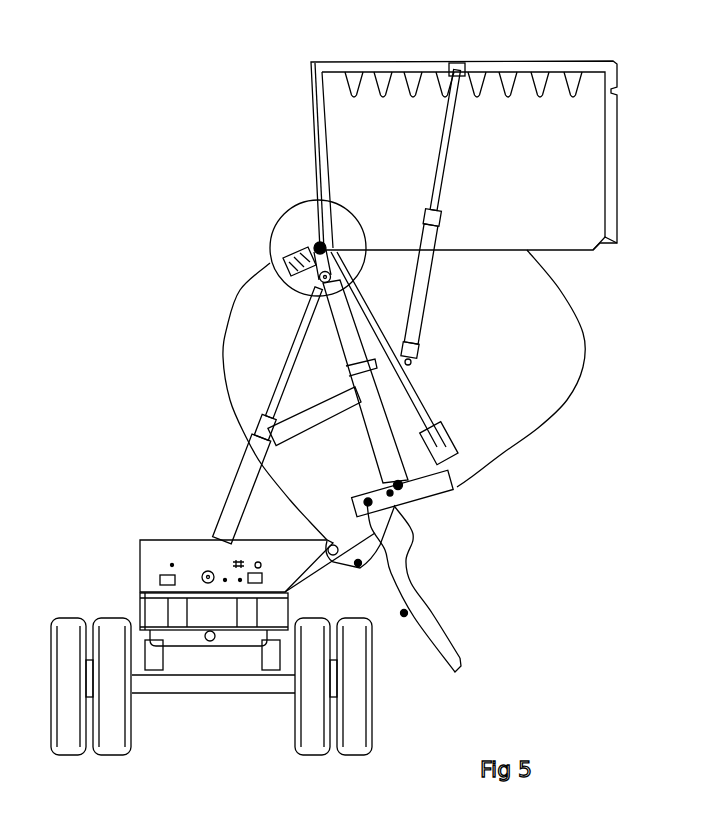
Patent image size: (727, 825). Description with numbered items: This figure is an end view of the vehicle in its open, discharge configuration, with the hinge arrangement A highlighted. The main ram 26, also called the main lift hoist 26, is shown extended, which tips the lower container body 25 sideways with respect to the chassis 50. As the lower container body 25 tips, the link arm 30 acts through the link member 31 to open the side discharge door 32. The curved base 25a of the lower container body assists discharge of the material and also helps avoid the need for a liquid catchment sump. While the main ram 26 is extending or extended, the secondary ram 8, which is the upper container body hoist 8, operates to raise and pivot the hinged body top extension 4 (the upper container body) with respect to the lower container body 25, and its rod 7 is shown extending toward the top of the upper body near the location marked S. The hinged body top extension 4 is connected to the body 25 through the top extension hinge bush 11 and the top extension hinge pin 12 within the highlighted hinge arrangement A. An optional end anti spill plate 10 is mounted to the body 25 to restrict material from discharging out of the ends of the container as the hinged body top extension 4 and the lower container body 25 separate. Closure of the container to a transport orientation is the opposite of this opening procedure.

The hinged body top extension 4 is at (333, 113).
The center of bucket S is at (448, 70).
The tilt cylinder rod 7 is at (437, 200).
The upper container body hoist 8 is at (425, 320).
The anti spill plate 10 is at (490, 447).
The hinge arrangement A is at (290, 208).
The top extension hinge bush 11 is at (308, 242).
The top extension hinge pin 12 is at (312, 246).
The lower container body 25 is at (222, 368).
The curved base 25a is at (228, 406).
The main lift hoist 26 is at (233, 474).
The link arm 30 is at (450, 508).
The link member 31 is at (415, 522).
The side discharge door 32 is at (420, 655).
The chassis 50 is at (140, 566).